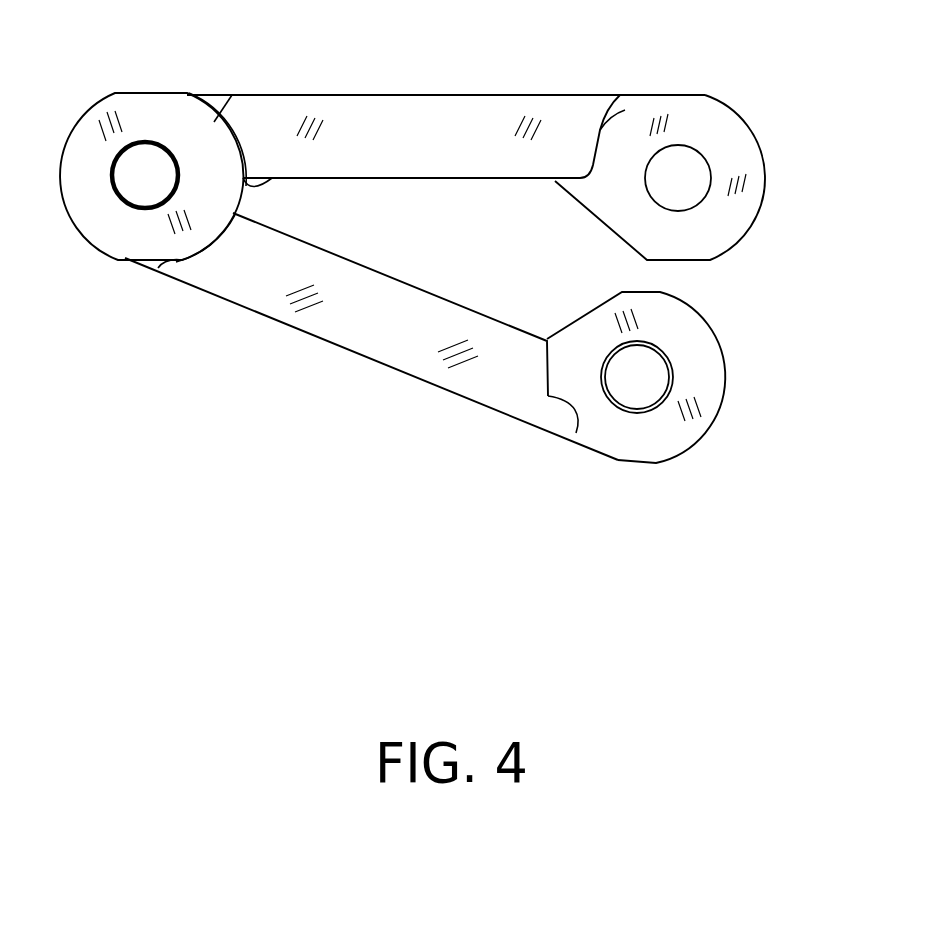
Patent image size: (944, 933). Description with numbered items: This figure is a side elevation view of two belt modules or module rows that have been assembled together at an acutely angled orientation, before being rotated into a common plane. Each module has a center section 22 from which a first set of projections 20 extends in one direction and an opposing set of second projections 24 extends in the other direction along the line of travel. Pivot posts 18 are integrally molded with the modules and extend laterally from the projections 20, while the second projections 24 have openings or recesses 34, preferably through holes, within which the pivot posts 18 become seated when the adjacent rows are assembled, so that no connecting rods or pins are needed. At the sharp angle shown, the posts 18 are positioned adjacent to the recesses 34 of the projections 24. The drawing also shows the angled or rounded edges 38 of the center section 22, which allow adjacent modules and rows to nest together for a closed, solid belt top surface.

The pivot post 18 is at (670, 384).
The projection 20 is at (645, 453).
The center section 22 is at (457, 94).
The second projection 24 is at (722, 115).
The recess 34 is at (685, 193).
The edge 38 is at (218, 122).